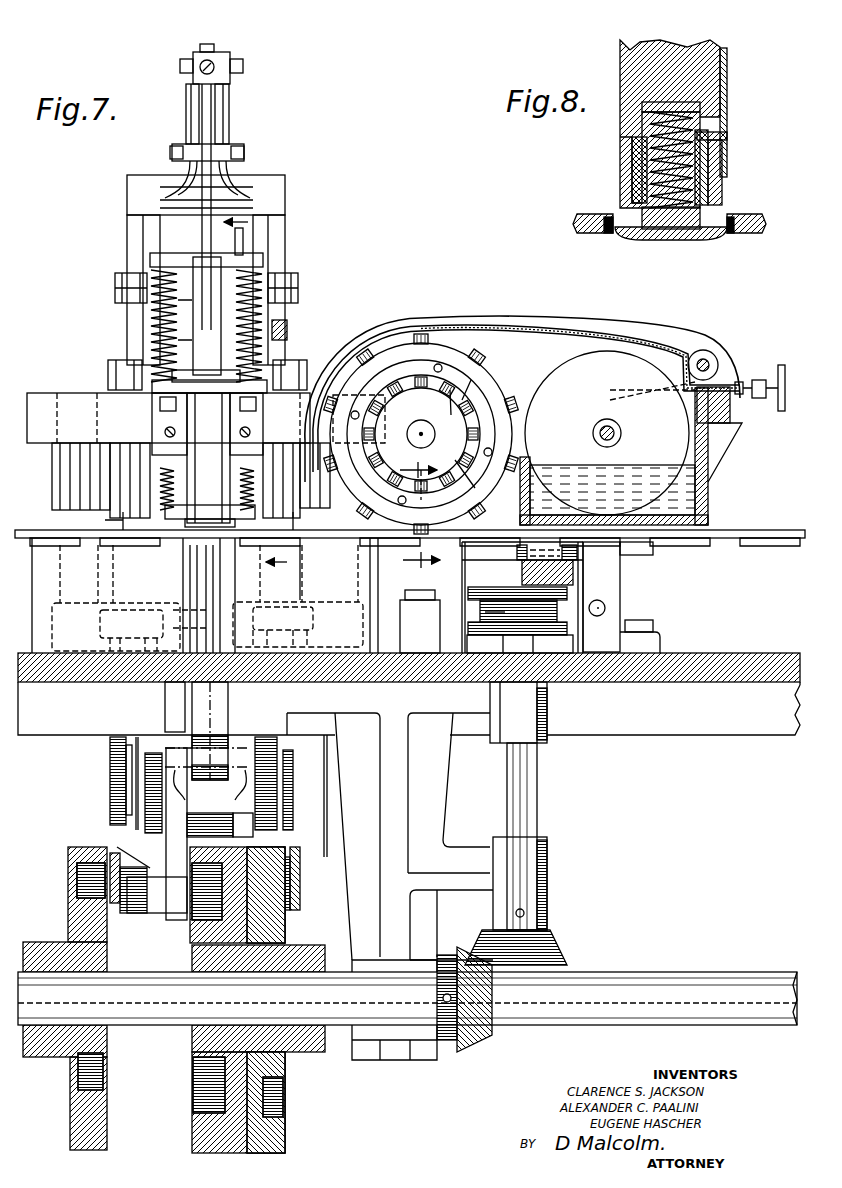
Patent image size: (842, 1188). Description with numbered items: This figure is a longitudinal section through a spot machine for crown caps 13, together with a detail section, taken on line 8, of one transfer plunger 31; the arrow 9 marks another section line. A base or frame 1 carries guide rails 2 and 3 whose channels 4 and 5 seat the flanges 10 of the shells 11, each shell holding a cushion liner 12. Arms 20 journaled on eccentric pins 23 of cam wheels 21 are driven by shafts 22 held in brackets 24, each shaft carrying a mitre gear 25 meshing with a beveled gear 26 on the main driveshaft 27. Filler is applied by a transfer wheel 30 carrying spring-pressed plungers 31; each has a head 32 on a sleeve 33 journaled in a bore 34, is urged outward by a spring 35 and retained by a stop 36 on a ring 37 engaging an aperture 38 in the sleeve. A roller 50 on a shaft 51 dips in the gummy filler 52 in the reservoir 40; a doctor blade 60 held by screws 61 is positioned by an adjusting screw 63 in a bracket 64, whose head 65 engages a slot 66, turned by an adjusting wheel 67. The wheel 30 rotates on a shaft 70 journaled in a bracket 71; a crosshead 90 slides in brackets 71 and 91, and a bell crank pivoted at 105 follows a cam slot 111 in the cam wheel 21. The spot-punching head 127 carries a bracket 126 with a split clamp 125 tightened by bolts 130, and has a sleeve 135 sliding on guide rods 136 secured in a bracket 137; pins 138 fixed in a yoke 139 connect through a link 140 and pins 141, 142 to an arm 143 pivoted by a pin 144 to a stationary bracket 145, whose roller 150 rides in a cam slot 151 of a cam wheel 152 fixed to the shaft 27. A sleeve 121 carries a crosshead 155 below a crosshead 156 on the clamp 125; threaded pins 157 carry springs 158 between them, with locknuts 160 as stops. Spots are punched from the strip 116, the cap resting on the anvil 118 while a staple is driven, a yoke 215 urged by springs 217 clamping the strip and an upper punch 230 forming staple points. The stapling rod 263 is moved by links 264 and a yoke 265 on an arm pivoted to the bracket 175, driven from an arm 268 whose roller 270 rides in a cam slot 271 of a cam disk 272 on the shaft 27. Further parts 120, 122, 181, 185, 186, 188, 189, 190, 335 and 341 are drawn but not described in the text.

In FIG. 7, the base or frame 1 is at (32, 723).
In FIG. 8, the guide rail 2 is at (753, 230).
In FIG. 7, the guide rail 3 is at (768, 530).
In FIG. 8, the guide rail 3 is at (577, 227).
In FIG. 8, the channel 4 is at (747, 240).
In FIG. 8, the channel 5 is at (590, 234).
In FIG. 7, the section line 8 is at (420, 517).
In FIG. 7, the direction arrow 9 is at (255, 391).
In FIG. 8, the flange 10 is at (610, 233).
In FIG. 8, the shell 11 is at (637, 243).
In FIG. 8, the cushion liner 12 is at (670, 247).
In FIG. 7, the crown cap 13 is at (140, 545).
In FIG. 8, the crown cap 13 is at (650, 240).
In FIG. 7, the arm 20 is at (557, 573).
In FIG. 7, the cam wheel 21 is at (522, 597).
In FIG. 7, the shaft 22 is at (525, 800).
In FIG. 7, the pin 23 is at (580, 553).
In FIG. 7, the bracket 24 is at (548, 738).
In FIG. 7, the mitre gear 25 is at (567, 948).
In FIG. 7, the beveled gear 26 is at (485, 1037).
In FIG. 7, the main driveshaft 27 is at (698, 955).
In FIG. 7, the transfer wheel 30 is at (480, 375).
In FIG. 8, the transfer wheel 30 is at (710, 62).
In FIG. 7, the transfer plunger 31 is at (463, 342).
In FIG. 8, the transfer plunger 31 is at (638, 172).
In FIG. 8, the head 32 is at (693, 247).
In FIG. 7, the sleeve 33 is at (480, 436).
In FIG. 8, the sleeve 33 is at (707, 180).
In FIG. 8, the bore 34 is at (642, 115).
In FIG. 8, the spring 35 is at (682, 107).
In FIG. 8, the stop 36 is at (730, 137).
In FIG. 7, the ring 37 is at (490, 418).
In FIG. 8, the ring 37 is at (732, 157).
In FIG. 8, the aperture 38 is at (727, 150).
In FIG. 7, the reservoir 40 is at (695, 455).
In FIG. 7, the roller 50 is at (570, 368).
In FIG. 7, the shaft 51 is at (621, 434).
In FIG. 7, the gummy filler 52 is at (680, 502).
In FIG. 7, the doctor blade 60 is at (677, 380).
In FIG. 7, the screw 61 is at (727, 370).
In FIG. 7, the adjusting screw 63 is at (753, 382).
In FIG. 7, the bracket 64 is at (762, 380).
In FIG. 7, the head 65 is at (737, 383).
In FIG. 7, the slot 66 is at (700, 398).
In FIG. 7, the adjusting wheel 67 is at (781, 377).
In FIG. 7, the shaft 70 is at (421, 427).
In FIG. 7, the bracket 71 is at (397, 637).
In FIG. 7, the crosshead 90 is at (645, 547).
In FIG. 7, the bracket 91 is at (610, 573).
In FIG. 7, the pivot 105 is at (605, 608).
In FIG. 7, the cam slot 111 is at (500, 612).
In FIG. 7, the strip 116 is at (119, 622).
In FIG. 7, the anvil 118 is at (200, 618).
In FIG. 7, the plate 120 is at (202, 508).
In FIG. 7, the sleeve 121 is at (213, 463).
In FIG. 7, the rod 122 is at (213, 540).
In FIG. 7, the split clamp 125 is at (193, 275).
In FIG. 7, the bracket 126 is at (108, 375).
In FIG. 7, the head 127 is at (47, 403).
In FIG. 7, the bolt 130 is at (298, 288).
In FIG. 7, the sleeve 135 is at (70, 457).
In FIG. 7, the guide rod 136 is at (67, 520).
In FIG. 7, the bracket 137 is at (378, 583).
In FIG. 7, the pin 138 is at (123, 512).
In FIG. 7, the yoke 139 is at (98, 627).
In FIG. 7, the link 140 is at (215, 700).
In FIG. 7, the pin 141 is at (210, 728).
In FIG. 7, the pin 142 is at (207, 753).
In FIG. 7, the arm 143 is at (240, 820).
In FIG. 7, the pin 144 is at (337, 792).
In FIG. 7, the stationary bracket 145 is at (130, 775).
In FIG. 7, the roller 150 is at (210, 912).
In FIG. 7, the cam slot 151 is at (193, 950).
In FIG. 7, the cam wheel 152 is at (213, 1037).
In FIG. 7, the crosshead 155 is at (290, 380).
In FIG. 7, the crosshead 156 is at (263, 262).
In FIG. 7, the threaded pin 157 is at (260, 282).
In FIG. 7, the spring 158 is at (152, 312).
In FIG. 7, the locknut 160 is at (160, 405).
In FIG. 7, the bracket 175 is at (127, 220).
In FIG. 7, the pin 181 is at (243, 240).
In FIG. 7, the bracket 185 is at (280, 713).
In FIG. 7, the plate 186 is at (293, 905).
In FIG. 7, the gear 188 is at (290, 830).
In FIG. 7, the bearing 189 is at (275, 1087).
In FIG. 7, the housing 190 is at (273, 1135).
In FIG. 7, the yoke 215 is at (307, 553).
In FIG. 7, the spring 217 is at (160, 480).
In FIG. 7, the upper punch 230 is at (165, 432).
In FIG. 7, the rod 263 is at (214, 47).
In FIG. 7, the link 264 is at (190, 122).
In FIG. 7, the yoke 265 is at (228, 178).
In FIG. 7, the arm 268 is at (117, 847).
In FIG. 7, the roller 270 is at (90, 878).
In FIG. 7, the cam slot 271 is at (100, 902).
In FIG. 7, the cam disk 272 is at (62, 1040).
In FIG. 7, the belt 335 is at (332, 330).
In FIG. 7, the belt 341 is at (343, 317).